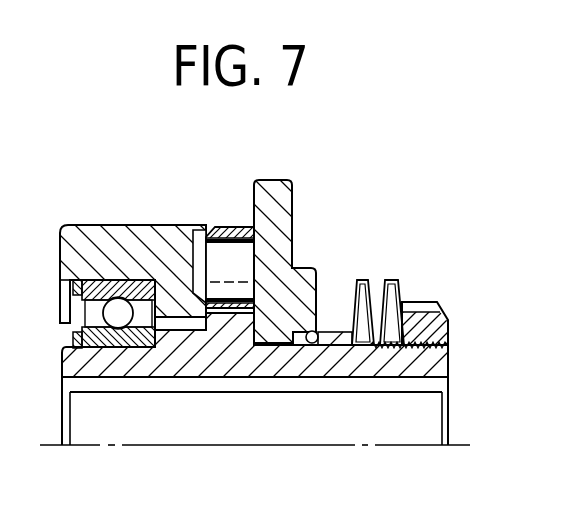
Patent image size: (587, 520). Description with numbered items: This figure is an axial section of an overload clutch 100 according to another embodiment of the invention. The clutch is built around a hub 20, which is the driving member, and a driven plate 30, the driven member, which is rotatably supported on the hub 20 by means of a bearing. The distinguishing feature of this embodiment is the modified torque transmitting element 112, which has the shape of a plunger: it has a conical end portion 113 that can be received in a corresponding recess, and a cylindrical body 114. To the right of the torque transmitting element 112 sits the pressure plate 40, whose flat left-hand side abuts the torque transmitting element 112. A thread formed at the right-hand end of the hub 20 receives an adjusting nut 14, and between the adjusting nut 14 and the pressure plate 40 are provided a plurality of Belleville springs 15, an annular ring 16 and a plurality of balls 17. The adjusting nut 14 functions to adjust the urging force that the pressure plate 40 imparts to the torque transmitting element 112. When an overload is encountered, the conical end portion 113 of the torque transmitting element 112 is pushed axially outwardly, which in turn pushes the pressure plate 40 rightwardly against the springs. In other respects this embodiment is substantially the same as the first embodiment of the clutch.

The overload clutch 100 is at (434, 207).
The adjusting nut 14 is at (450, 330).
The Belleville springs 15 is at (398, 280).
The annular ring 16 is at (339, 332).
The balls 17 is at (315, 330).
The hub 20 is at (162, 362).
The driven plate 30 is at (150, 225).
The pressure plate 40 is at (290, 186).
The torque transmitting element 112 is at (231, 228).
The conical end portion 113 is at (205, 241).
The cylindrical body 114 is at (244, 268).